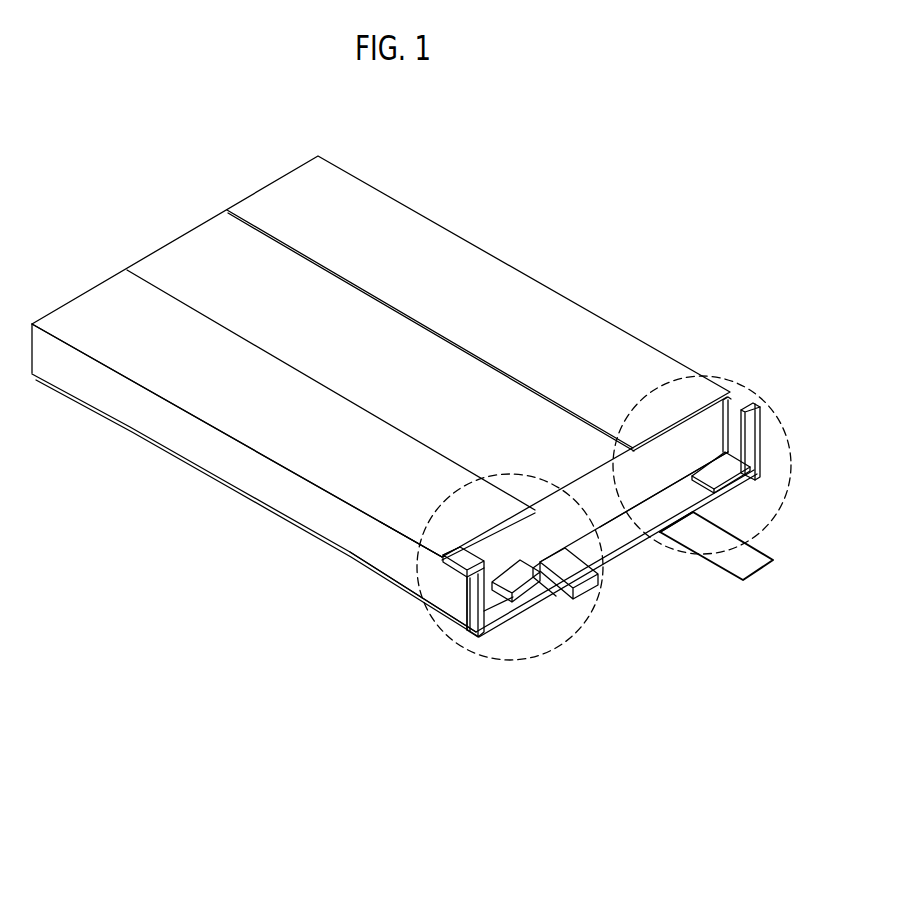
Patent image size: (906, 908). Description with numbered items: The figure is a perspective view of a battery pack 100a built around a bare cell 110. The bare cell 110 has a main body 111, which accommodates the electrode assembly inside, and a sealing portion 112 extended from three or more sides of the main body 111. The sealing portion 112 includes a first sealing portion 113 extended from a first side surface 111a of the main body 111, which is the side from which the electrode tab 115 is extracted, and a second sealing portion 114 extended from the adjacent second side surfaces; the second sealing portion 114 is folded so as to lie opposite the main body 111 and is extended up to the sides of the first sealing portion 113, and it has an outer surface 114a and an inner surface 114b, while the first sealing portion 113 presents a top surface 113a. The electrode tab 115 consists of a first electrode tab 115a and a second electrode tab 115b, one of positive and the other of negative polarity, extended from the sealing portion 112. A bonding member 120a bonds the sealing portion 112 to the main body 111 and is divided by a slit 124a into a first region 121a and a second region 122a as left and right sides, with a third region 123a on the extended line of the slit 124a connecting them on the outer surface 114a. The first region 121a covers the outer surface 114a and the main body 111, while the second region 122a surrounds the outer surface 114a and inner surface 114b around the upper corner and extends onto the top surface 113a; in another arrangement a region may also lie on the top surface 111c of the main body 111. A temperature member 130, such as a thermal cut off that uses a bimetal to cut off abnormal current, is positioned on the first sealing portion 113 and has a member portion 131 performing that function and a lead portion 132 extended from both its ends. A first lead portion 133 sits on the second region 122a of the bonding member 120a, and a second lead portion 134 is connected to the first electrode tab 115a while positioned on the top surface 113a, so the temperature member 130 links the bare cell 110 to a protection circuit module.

The battery pack 100a is at (102, 133).
The bare cell 110 is at (369, 779).
The main body 111 is at (407, 404).
The first side surface 111a is at (595, 501).
The top surface 111c is at (193, 243).
The sealing portion 112 is at (473, 648).
The first sealing portion 113 is at (633, 558).
The top surface of the first sealing portion 113a is at (620, 532).
The second sealing portion 114 is at (750, 463).
The outer surface of the second sealing portion 114a is at (484, 640).
The inner surface of the second sealing portion 114b is at (750, 433).
The electrode tab 115 is at (745, 687).
The first electrode tab 115a is at (648, 615).
The second electrode tab 115b is at (740, 563).
The bonding member 120a is at (399, 669).
The first region 121a is at (402, 565).
The second region 122a is at (462, 595).
The third region 123a is at (440, 600).
The slit 124a is at (447, 555).
The temperature member 130 is at (542, 554).
The member portion 131 is at (511, 553).
The lead portion 132 is at (597, 690).
The first lead portion 133 is at (508, 600).
The second lead portion 134 is at (552, 612).